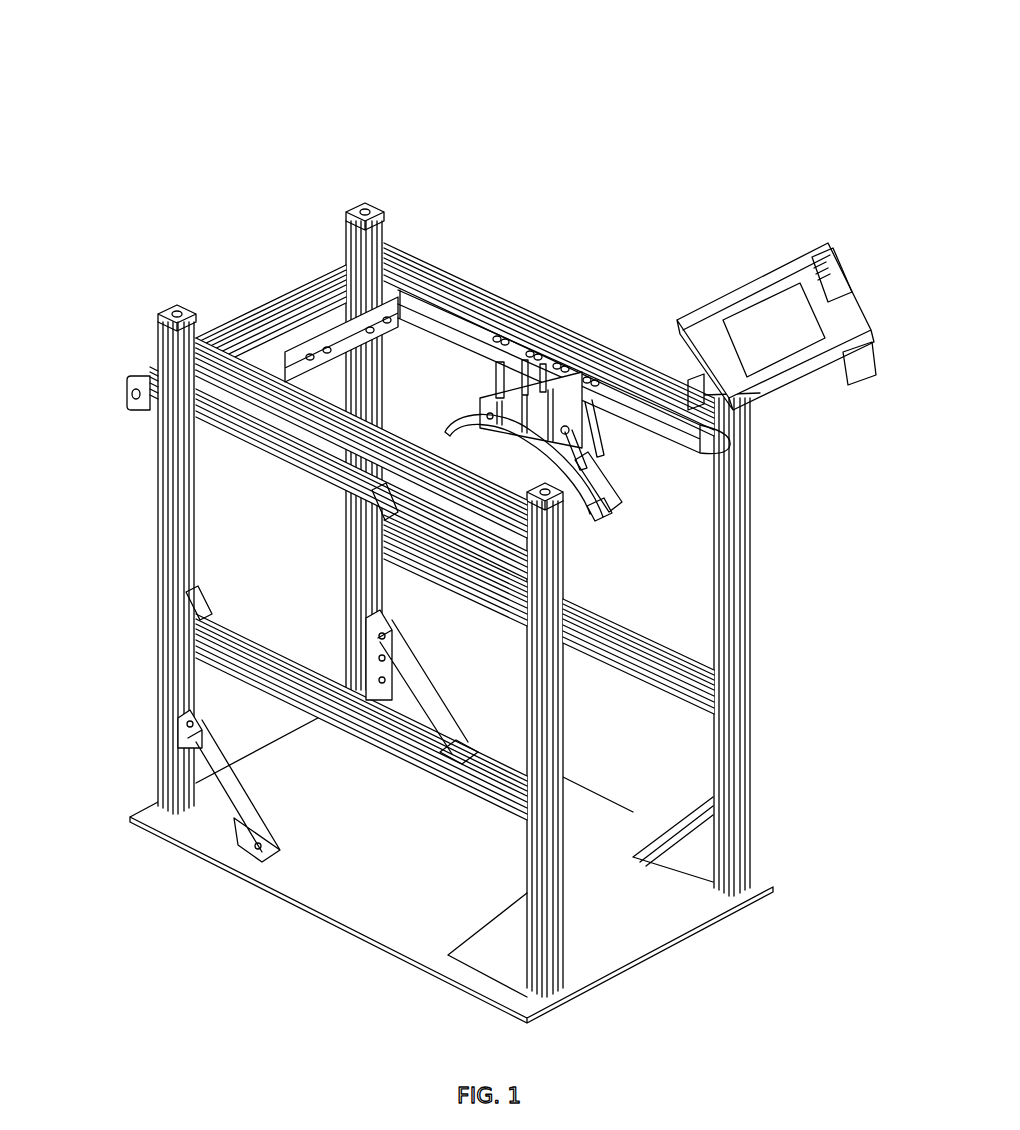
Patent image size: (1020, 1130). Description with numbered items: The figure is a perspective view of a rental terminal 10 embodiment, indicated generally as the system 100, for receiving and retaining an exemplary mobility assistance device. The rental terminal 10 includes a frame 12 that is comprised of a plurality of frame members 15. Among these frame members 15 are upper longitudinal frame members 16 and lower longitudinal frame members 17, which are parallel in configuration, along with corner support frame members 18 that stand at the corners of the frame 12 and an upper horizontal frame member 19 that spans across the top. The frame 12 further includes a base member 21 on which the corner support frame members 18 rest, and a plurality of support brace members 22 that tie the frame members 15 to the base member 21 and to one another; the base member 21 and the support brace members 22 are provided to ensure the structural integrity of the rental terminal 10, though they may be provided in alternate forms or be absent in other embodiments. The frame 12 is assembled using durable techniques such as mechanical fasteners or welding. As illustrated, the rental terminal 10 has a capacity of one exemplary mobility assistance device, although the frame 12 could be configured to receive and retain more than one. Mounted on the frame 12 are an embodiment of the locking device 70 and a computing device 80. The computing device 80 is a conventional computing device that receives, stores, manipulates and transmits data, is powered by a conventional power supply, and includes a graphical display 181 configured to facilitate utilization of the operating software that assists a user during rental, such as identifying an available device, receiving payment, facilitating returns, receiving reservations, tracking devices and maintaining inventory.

The inspection system 100 is at (668, 93).
The rental terminal 10 is at (287, 278).
The frame 12 is at (232, 300).
The frame members 15 is at (452, 290).
The upper longitudinal frame members 16 is at (407, 257).
The lower longitudinal frame members 17 is at (246, 643).
The corner support frame members 18 is at (158, 537).
The upper horizontal frame member 19 is at (318, 285).
The base member 21 is at (370, 860).
The support brace members 22 is at (398, 683).
The locking device 70 is at (530, 392).
The computing device 80 is at (794, 243).
The graphical display 181 is at (800, 310).